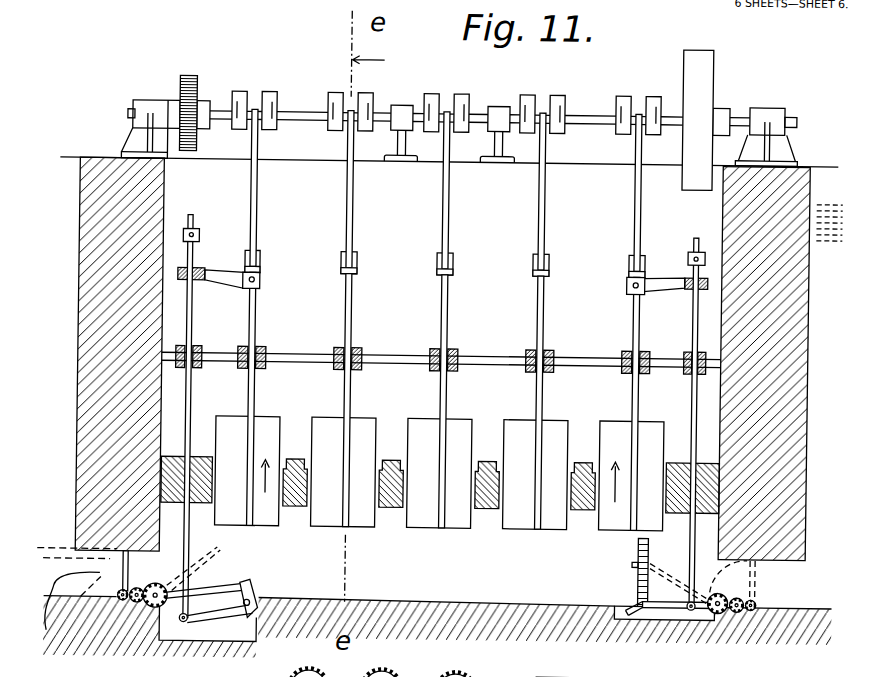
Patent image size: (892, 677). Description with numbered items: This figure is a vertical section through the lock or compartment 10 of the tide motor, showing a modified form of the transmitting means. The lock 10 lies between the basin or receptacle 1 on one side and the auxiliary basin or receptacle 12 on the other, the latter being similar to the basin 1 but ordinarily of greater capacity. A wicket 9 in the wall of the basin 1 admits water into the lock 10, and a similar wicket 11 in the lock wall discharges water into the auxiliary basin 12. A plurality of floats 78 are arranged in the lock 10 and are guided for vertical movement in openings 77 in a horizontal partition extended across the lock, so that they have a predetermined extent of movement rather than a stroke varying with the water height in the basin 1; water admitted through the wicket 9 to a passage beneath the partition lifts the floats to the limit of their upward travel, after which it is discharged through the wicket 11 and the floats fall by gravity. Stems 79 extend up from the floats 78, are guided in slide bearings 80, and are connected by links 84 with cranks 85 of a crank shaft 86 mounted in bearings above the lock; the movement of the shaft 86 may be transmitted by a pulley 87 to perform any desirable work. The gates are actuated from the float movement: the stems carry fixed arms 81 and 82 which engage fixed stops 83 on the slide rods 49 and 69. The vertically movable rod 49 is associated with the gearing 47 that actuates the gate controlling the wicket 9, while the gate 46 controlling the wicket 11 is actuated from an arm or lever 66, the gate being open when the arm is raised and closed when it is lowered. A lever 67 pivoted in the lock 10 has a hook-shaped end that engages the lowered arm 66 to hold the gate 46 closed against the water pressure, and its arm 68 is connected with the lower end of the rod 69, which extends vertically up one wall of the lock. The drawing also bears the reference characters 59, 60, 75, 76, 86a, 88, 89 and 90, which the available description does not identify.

The basin or receptacle 1 is at (754, 363).
The wicket 9 is at (783, 579).
The lock or compartment 10 is at (449, 222).
The wicket 11 is at (69, 617).
The auxiliary basin or receptacle 12 is at (127, 354).
The gate 46 is at (125, 576).
The gearing 47 is at (671, 604).
The vertically movable rod 49 is at (692, 390).
The bent rod 59 is at (641, 580).
The rack 60 is at (641, 543).
The arm or lever 66 is at (218, 590).
The lever 67 is at (260, 584).
The arm 68 is at (214, 620).
The rod 69 is at (190, 413).
The pit floor 75 is at (437, 604).
The die block 76 is at (397, 509).
The openings 77 is at (305, 457).
The floats 78 is at (424, 426).
The stems 79 is at (536, 302).
The slide bearings 80 is at (432, 353).
The fixed arm 81 is at (668, 289).
The fixed arm 82 is at (218, 271).
The fixed stops 83 is at (183, 230).
The links 84 is at (536, 201).
The cranks 85 is at (332, 93).
The crank shaft 86 is at (583, 106).
The gear 86a is at (489, 676).
The pulley 87 is at (704, 64).
The gear 88 is at (184, 77).
The gear 89 is at (402, 675).
The gear 90 is at (552, 666).